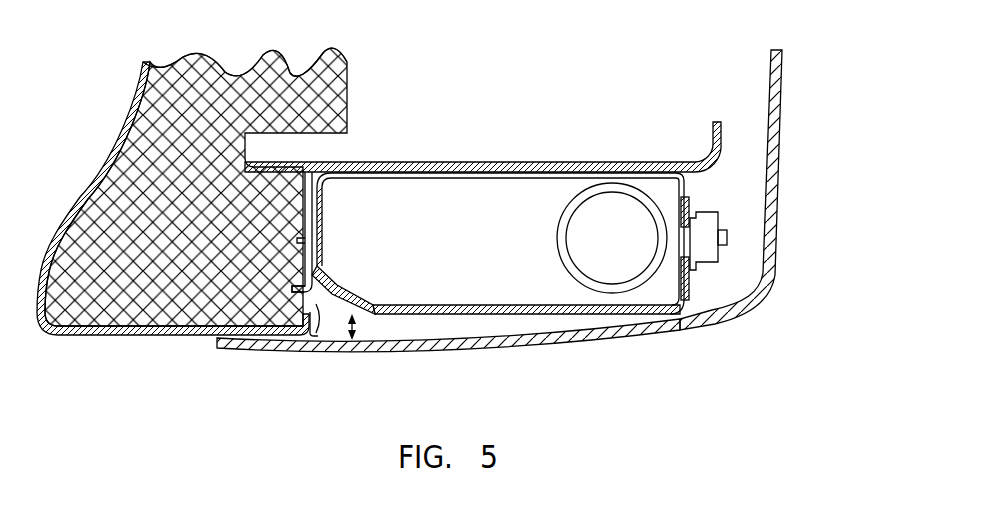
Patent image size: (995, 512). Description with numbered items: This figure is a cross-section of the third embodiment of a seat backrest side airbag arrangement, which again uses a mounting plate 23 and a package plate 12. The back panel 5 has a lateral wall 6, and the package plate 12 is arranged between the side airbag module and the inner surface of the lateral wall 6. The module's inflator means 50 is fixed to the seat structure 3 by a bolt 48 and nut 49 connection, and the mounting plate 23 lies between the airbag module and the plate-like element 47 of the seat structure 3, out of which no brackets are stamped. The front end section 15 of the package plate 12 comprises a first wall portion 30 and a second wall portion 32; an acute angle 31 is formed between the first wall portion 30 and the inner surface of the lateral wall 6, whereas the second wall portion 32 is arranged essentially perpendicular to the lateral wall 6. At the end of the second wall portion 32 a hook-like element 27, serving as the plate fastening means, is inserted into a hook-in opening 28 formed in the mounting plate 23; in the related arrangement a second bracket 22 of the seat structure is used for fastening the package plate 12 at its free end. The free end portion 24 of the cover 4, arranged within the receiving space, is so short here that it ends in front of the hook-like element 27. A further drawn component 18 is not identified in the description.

The seat structure 3 is at (461, 138).
The cover 4 is at (114, 336).
The back panel 5 is at (798, 130).
The lateral wall 6 is at (488, 336).
The package plate 12 is at (648, 324).
The front end section 15 is at (298, 305).
The housing bottom plate 18 is at (446, 322).
The second bracket 22 is at (173, 232).
The hook-like element 27 is at (283, 252).
The mounting plate 23 is at (488, 162).
The free end portion 24 is at (319, 338).
The hook-in opening 28 is at (297, 240).
The first wall portion 30 is at (348, 282).
The acute angle 31 is at (357, 338).
The second wall portion 32 is at (320, 253).
The plate-like element 47 is at (435, 162).
The bolt 48 is at (727, 234).
The nut 49 is at (708, 258).
The inflator means 50 is at (606, 185).